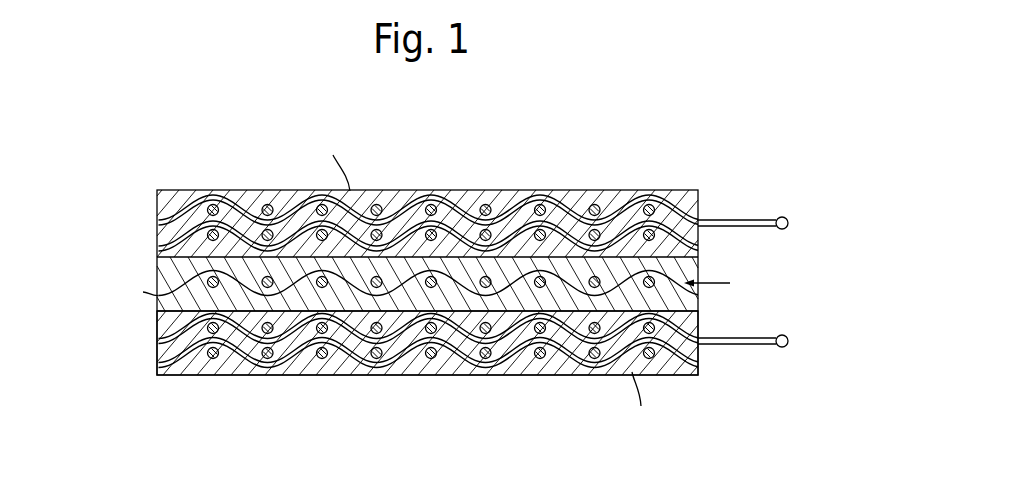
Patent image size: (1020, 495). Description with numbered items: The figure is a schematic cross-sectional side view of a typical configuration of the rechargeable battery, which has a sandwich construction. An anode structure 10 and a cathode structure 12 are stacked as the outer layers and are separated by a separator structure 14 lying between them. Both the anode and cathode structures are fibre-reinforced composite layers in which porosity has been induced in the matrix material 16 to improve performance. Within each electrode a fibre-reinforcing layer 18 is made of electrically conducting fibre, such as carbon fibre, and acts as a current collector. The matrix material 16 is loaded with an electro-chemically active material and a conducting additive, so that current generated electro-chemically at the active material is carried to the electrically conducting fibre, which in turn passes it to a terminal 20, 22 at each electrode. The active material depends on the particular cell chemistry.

The anode structure 10 is at (449, 265).
The cathode structure 12 is at (208, 376).
The separator structure 14 is at (686, 266).
The matrix material 16 is at (196, 191).
The fibre-reinforcing layer 18 is at (483, 191).
The terminal 20 is at (777, 218).
The terminal 22 is at (777, 348).